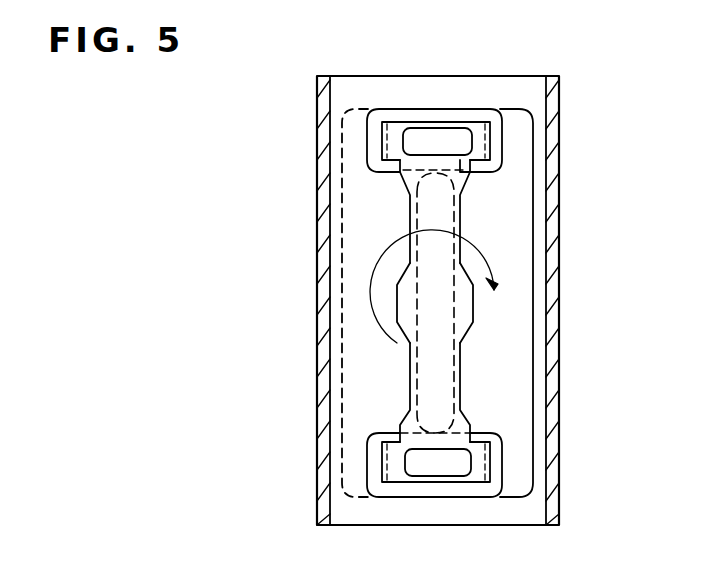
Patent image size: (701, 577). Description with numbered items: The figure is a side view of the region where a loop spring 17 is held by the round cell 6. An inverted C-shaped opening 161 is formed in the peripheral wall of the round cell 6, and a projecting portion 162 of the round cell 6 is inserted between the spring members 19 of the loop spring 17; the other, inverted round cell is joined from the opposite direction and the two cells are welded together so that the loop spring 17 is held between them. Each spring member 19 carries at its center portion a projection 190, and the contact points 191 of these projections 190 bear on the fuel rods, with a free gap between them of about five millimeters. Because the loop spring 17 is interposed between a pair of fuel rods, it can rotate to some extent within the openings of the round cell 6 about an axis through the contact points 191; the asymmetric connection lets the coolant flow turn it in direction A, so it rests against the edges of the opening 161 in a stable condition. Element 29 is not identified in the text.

The round cell 6 is at (560, 452).
The loop spring 17 is at (463, 220).
The spring member 19 is at (461, 250).
The slot 29 is at (443, 140).
The inverted C-shaped opening 161 is at (373, 142).
The projecting portion 162 is at (454, 258).
The projection 190 is at (397, 297).
The contact point 191 is at (433, 306).